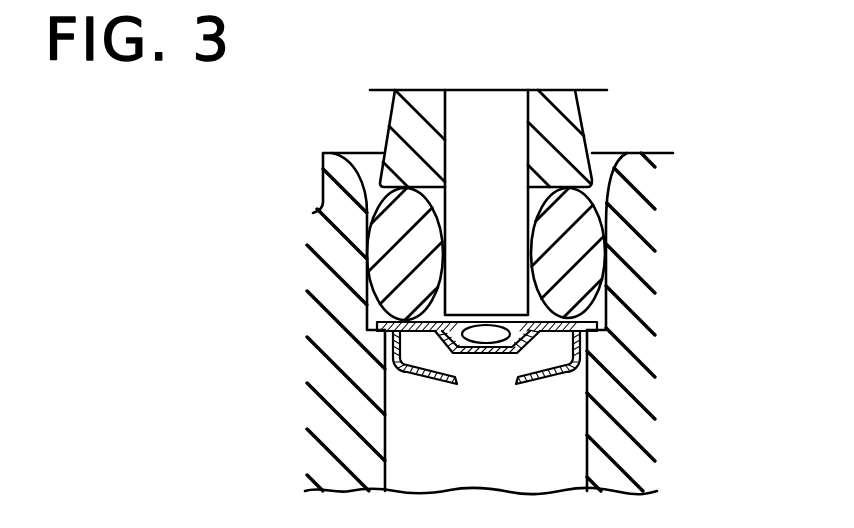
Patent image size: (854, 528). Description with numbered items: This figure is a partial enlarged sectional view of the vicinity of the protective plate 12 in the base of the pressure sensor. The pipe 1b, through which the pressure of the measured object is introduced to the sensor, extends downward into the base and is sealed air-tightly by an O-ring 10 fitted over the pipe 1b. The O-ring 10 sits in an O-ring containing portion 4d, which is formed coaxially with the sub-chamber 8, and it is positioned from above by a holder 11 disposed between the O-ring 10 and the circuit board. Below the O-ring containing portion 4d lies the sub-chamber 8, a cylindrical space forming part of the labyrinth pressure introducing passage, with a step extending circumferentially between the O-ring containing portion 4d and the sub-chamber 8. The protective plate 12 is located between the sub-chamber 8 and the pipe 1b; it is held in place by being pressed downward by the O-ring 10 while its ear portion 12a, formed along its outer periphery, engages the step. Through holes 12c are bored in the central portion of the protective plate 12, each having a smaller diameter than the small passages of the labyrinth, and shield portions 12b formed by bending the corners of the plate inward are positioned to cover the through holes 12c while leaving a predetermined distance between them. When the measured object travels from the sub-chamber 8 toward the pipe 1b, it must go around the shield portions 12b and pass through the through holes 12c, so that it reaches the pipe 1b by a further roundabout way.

The holder 11 is at (583, 118).
The pipe 1b is at (497, 268).
The O-ring 10 is at (606, 202).
The O-ring containing portion 4d is at (373, 326).
The sub-chamber 8 is at (400, 436).
The protective plate 12 is at (545, 384).
The ear portion 12a is at (597, 321).
The shield portion 12b is at (552, 384).
The through hole 12c is at (537, 348).